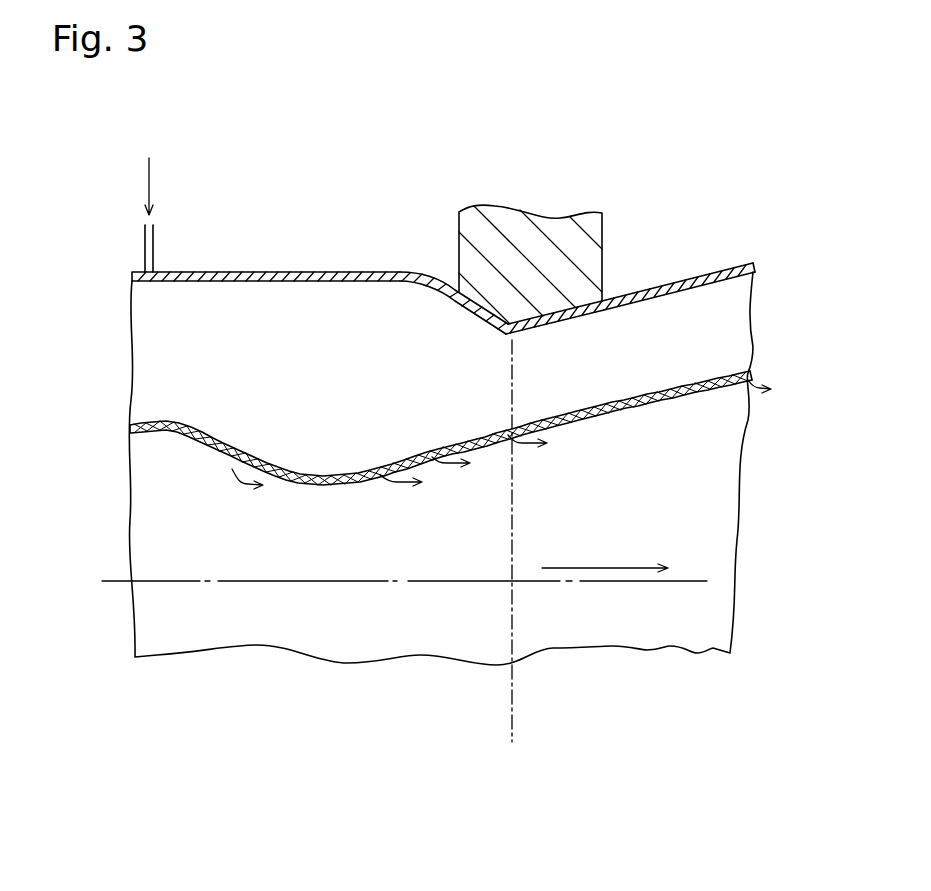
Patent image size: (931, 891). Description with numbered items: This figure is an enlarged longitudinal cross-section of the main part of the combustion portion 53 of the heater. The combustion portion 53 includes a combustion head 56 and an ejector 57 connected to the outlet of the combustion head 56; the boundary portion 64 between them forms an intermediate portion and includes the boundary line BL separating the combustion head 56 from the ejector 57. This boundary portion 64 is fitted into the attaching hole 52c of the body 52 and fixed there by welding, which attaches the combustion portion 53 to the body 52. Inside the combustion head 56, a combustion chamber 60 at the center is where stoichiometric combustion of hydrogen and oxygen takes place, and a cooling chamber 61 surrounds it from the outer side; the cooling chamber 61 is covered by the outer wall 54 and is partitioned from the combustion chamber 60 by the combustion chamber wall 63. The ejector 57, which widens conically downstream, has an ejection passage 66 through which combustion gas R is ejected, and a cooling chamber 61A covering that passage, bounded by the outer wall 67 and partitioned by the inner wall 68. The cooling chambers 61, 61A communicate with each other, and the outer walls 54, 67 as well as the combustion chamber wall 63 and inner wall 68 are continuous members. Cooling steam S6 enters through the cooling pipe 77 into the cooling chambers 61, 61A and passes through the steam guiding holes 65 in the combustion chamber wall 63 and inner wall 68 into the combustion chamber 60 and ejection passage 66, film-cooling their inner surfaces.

The body 52 is at (585, 227).
The attaching hole 52c is at (556, 314).
The combustion portion 53 is at (391, 676).
The outer wall 54 is at (302, 271).
The combustion head 56 is at (385, 271).
The ejector 57 is at (751, 264).
The combustion chamber 60 is at (447, 553).
The cooling chamber 61 is at (220, 300).
The cooling chamber 61A is at (725, 342).
The combustion chamber wall 63 is at (163, 434).
The boundary portion 64 is at (516, 322).
The steam guiding holes 65 is at (221, 452).
The ejection passage 66 is at (713, 507).
The outer wall 67 is at (712, 273).
The inner wall 68 is at (720, 390).
The cooling pipe 77 is at (142, 240).
The cooling steam S6 is at (149, 167).
The combustion gas R is at (637, 566).
The boundary line BL is at (515, 713).